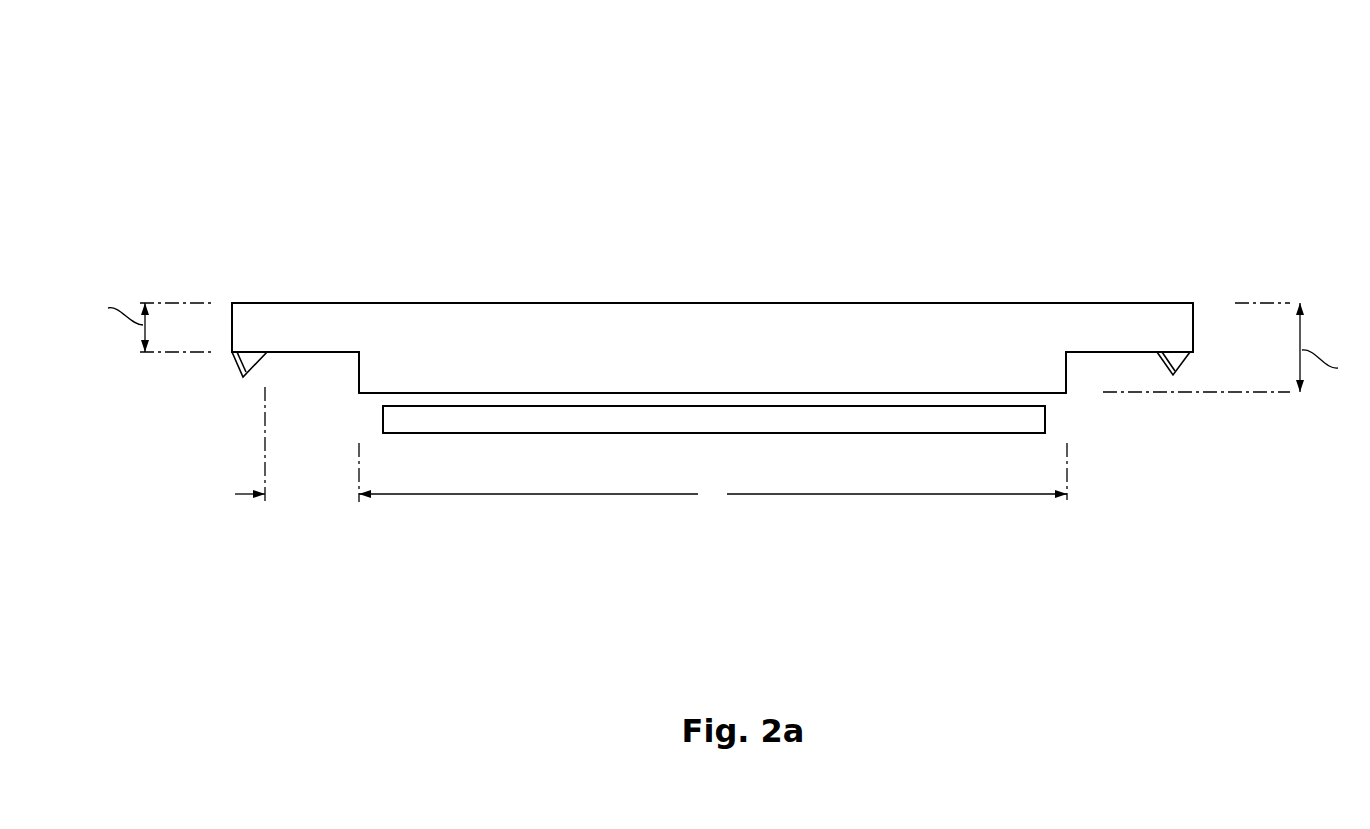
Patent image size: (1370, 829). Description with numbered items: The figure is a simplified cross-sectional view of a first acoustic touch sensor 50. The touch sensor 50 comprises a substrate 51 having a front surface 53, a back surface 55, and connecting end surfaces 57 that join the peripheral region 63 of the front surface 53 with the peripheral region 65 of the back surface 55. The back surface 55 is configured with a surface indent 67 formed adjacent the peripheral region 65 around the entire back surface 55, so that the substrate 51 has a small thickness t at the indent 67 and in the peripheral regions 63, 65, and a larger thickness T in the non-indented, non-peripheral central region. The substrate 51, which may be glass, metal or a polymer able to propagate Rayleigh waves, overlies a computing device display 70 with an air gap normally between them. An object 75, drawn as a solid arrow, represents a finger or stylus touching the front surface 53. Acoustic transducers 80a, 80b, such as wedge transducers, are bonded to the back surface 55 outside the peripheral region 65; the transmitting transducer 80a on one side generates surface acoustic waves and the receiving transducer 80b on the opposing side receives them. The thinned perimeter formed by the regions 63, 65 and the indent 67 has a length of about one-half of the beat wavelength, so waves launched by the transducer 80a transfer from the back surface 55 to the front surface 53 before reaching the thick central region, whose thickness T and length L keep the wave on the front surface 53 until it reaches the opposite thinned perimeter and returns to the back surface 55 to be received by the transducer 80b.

The acoustic touch sensor 50 is at (250, 94).
The substrate 51 is at (712, 348).
The front surface 53 is at (568, 303).
The back surface 55 is at (512, 393).
The connecting end surfaces 57 is at (232, 317).
The peripheral region of the front surface 63 is at (243, 255).
The peripheral region of the back surface 65 is at (358, 522).
The surface indent 67 is at (294, 402).
The computing device display 70 is at (590, 423).
The object 75 is at (711, 275).
The transmitting transducer 80a is at (240, 360).
The receiving transducer 80b is at (1180, 355).